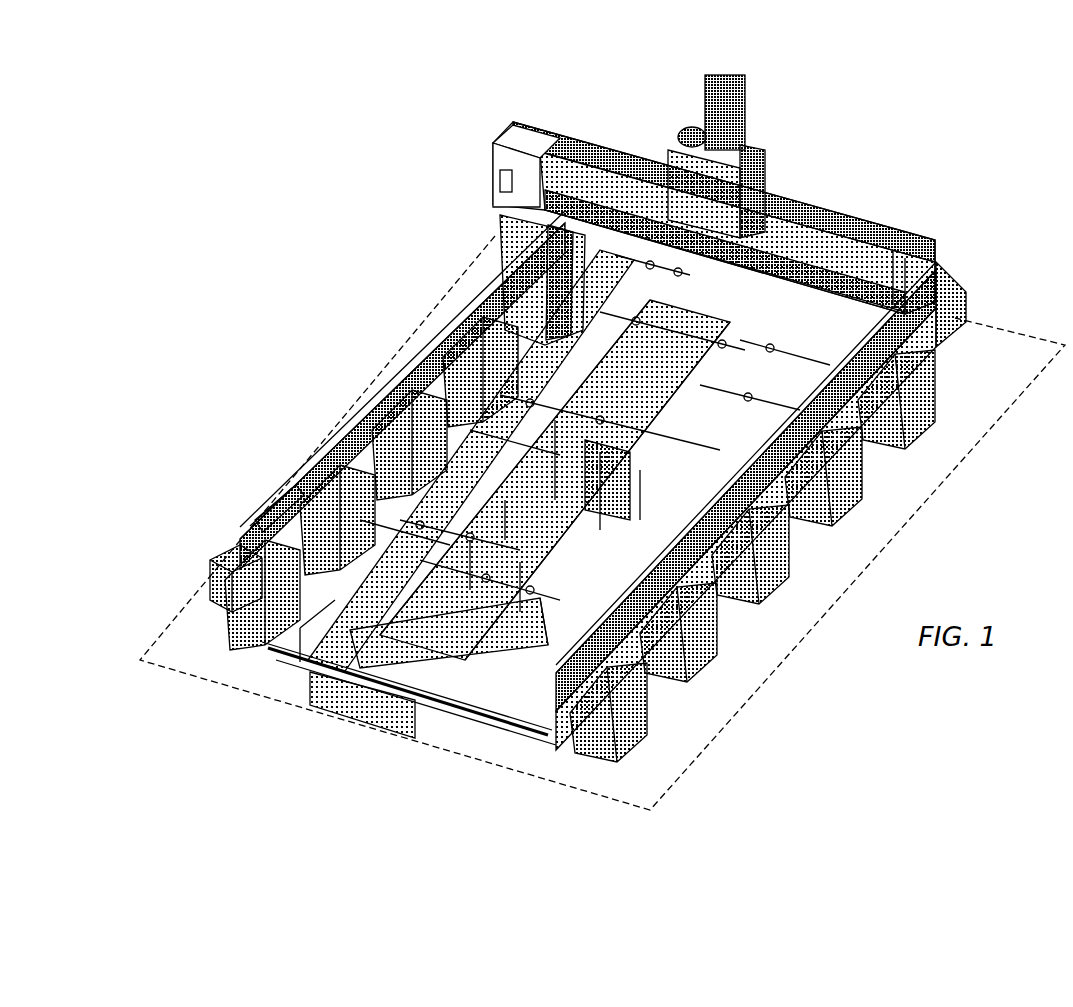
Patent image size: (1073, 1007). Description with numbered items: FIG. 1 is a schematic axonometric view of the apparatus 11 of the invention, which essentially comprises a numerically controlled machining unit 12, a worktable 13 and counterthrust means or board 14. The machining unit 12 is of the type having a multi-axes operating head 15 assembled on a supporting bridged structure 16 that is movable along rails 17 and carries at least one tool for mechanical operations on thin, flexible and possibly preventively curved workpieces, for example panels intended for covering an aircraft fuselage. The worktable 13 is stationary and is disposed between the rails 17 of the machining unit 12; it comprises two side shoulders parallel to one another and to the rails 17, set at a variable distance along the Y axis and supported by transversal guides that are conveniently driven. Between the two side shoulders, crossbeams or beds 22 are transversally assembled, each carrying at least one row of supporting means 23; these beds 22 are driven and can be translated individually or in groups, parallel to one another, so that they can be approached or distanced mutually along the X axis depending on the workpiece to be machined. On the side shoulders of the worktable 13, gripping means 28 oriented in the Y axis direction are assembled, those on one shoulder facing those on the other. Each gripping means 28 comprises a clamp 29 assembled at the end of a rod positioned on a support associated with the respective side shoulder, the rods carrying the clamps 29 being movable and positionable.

The apparatus 11 is at (596, 441).
The numerically controlled machining unit 12 is at (704, 191).
The worktable 13 is at (474, 674).
The counterthrust means or board 14 is at (466, 312).
The multi-axes operating head 15 is at (695, 158).
The supporting bridged structure 16 is at (558, 130).
The rails 17 is at (352, 409).
The crossbeams or beds 22 is at (452, 605).
The supporting means 23 is at (282, 492).
The gripping means 28 is at (217, 568).
The clamp 29 is at (350, 576).